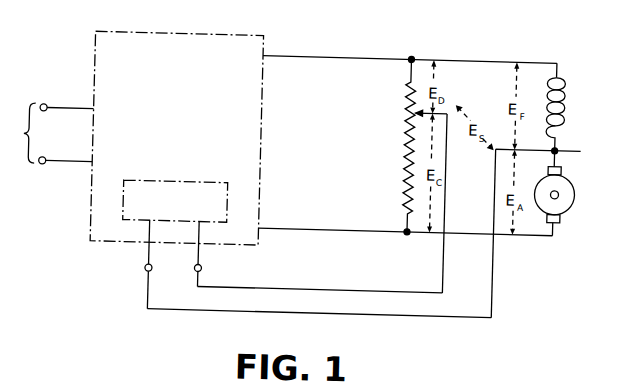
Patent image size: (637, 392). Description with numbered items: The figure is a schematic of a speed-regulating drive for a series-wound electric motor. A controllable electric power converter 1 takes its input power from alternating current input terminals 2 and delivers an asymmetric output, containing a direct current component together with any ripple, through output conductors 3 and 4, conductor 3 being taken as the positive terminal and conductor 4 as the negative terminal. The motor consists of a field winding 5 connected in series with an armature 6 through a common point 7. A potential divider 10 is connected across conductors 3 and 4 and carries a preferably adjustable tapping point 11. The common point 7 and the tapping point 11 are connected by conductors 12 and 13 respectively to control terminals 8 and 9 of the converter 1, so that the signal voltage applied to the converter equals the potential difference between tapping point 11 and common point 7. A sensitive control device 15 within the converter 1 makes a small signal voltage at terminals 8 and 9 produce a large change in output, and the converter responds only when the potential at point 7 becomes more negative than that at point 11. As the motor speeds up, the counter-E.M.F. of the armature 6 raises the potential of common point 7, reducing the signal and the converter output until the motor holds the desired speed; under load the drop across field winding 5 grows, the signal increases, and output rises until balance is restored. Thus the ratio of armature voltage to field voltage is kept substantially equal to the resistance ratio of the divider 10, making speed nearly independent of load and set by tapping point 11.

The controllable electric power converter 1 is at (128, 40).
The alternating current input terminals 2 is at (50, 133).
The output conductor 3 is at (385, 60).
The output conductor 4 is at (385, 232).
The field winding 5 is at (567, 104).
The armature 6 is at (578, 190).
The common point 7 is at (543, 150).
The control terminal 8 is at (150, 274).
The control terminal 9 is at (207, 274).
The potential divider 10 is at (406, 154).
The tapping point 11 is at (418, 115).
The conductor 12 is at (357, 316).
The conductor 13 is at (384, 292).
The sensitive control device 15 is at (183, 188).